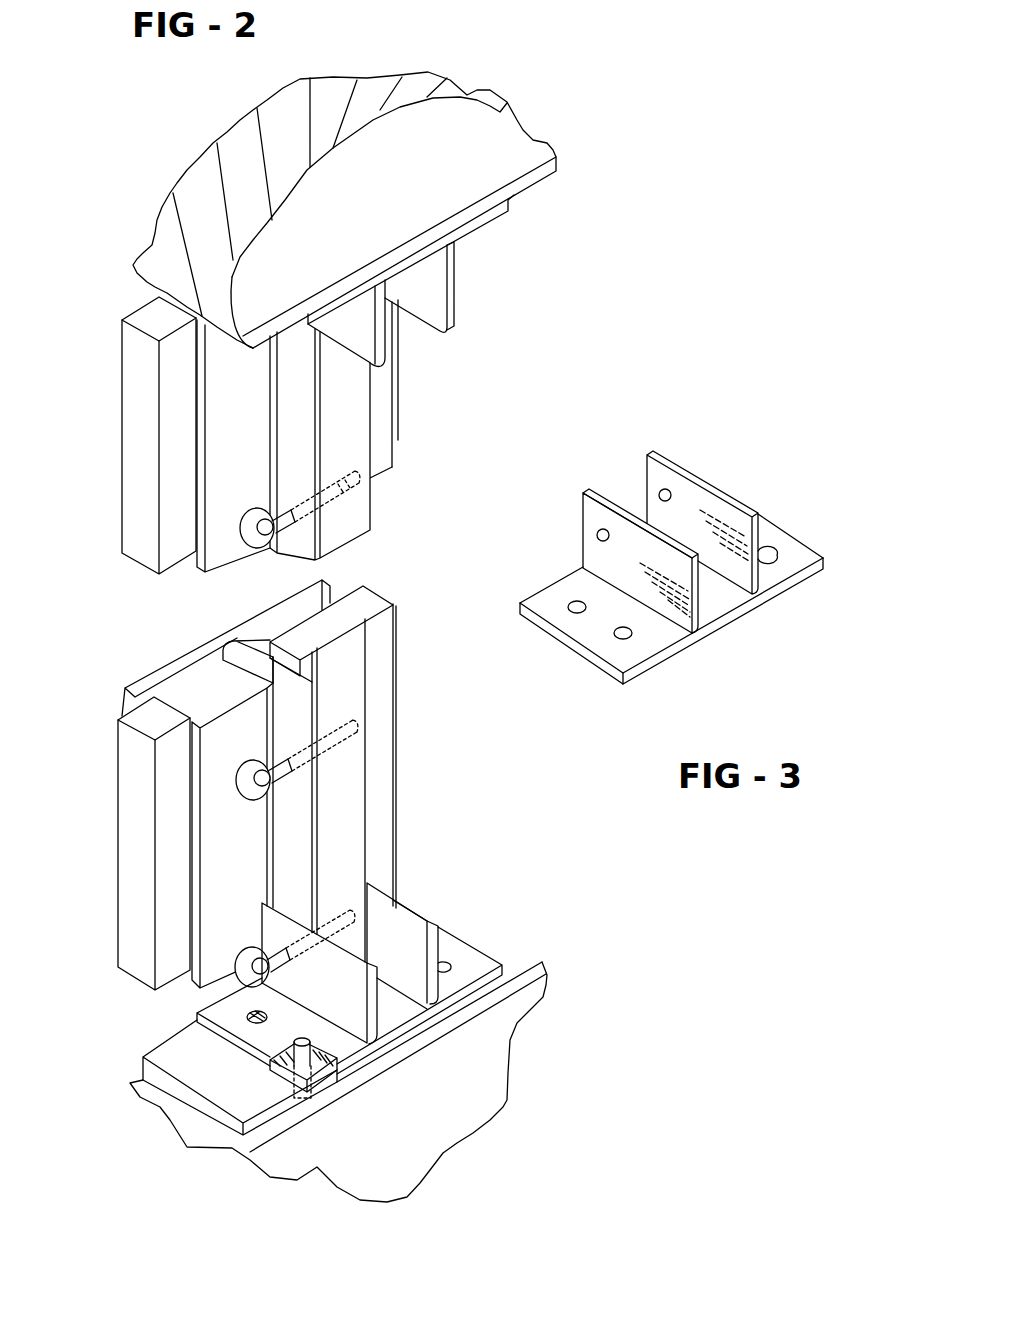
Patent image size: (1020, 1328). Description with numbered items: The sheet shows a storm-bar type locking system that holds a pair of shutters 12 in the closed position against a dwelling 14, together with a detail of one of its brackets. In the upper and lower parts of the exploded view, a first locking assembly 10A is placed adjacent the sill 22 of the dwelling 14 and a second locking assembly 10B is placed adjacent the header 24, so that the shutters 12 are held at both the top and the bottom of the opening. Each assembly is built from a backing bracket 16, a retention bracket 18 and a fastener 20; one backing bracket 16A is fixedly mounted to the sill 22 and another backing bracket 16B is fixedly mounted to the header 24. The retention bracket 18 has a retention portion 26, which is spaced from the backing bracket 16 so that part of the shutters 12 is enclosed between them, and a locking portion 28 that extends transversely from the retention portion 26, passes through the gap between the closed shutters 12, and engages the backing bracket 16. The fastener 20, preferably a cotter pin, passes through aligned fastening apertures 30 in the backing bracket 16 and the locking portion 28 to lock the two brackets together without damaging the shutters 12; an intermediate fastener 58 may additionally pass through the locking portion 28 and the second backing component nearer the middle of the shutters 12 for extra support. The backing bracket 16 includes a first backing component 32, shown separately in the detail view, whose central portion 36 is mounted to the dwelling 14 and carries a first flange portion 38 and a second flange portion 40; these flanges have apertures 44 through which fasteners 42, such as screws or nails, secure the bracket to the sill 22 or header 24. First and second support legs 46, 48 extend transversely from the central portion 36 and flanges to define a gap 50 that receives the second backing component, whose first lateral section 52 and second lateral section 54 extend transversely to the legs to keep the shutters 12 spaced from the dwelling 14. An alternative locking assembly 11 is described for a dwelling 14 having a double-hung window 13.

In FIG. 2, the first locking assembly 10A is at (463, 781).
In FIG. 2, the second locking assembly 10B is at (458, 377).
In FIG. 2, the alternative locking assembly 11 is at (150, 317).
In FIG. 2, the shutters 12 is at (393, 442).
In FIG. 2, the double-hung window 13 is at (137, 983).
In FIG. 2, the dwelling 14 is at (477, 135).
In FIG. 3, the backing bracket 16 is at (694, 539).
In FIG. 2, the backing bracket 16A is at (384, 1015).
In FIG. 2, the backing bracket 16B is at (470, 278).
In FIG. 2, the retention bracket 18 is at (239, 729).
In FIG. 2, the fastener 20 is at (272, 536).
In FIG. 2, the sill 22 is at (533, 968).
In FIG. 2, the header 24 is at (550, 180).
In FIG. 2, the retention portion 26 is at (325, 590).
In FIG. 2, the locking portion 28 is at (317, 693).
In FIG. 3, the fastening aperture 30 is at (600, 537).
In FIG. 3, the first backing component 32 is at (733, 656).
In FIG. 2, the central portion 36 is at (397, 1012).
In FIG. 3, the central portion 36 is at (720, 603).
In FIG. 3, the first flange portion 38 is at (622, 665).
In FIG. 3, the second flange portion 40 is at (793, 562).
In FIG. 2, the fastener 42 is at (292, 1042).
In FIG. 2, the apertures 44 is at (443, 963).
In FIG. 3, the apertures 44 is at (571, 606).
In FIG. 3, the first support leg 46 is at (584, 492).
In FIG. 3, the second support leg 48 is at (680, 472).
In FIG. 3, the gap 50 is at (592, 488).
In FIG. 2, the first lateral section 52 is at (226, 446).
In FIG. 2, the second lateral section 54 is at (386, 408).
In FIG. 2, the intermediate fastener 58 is at (263, 777).